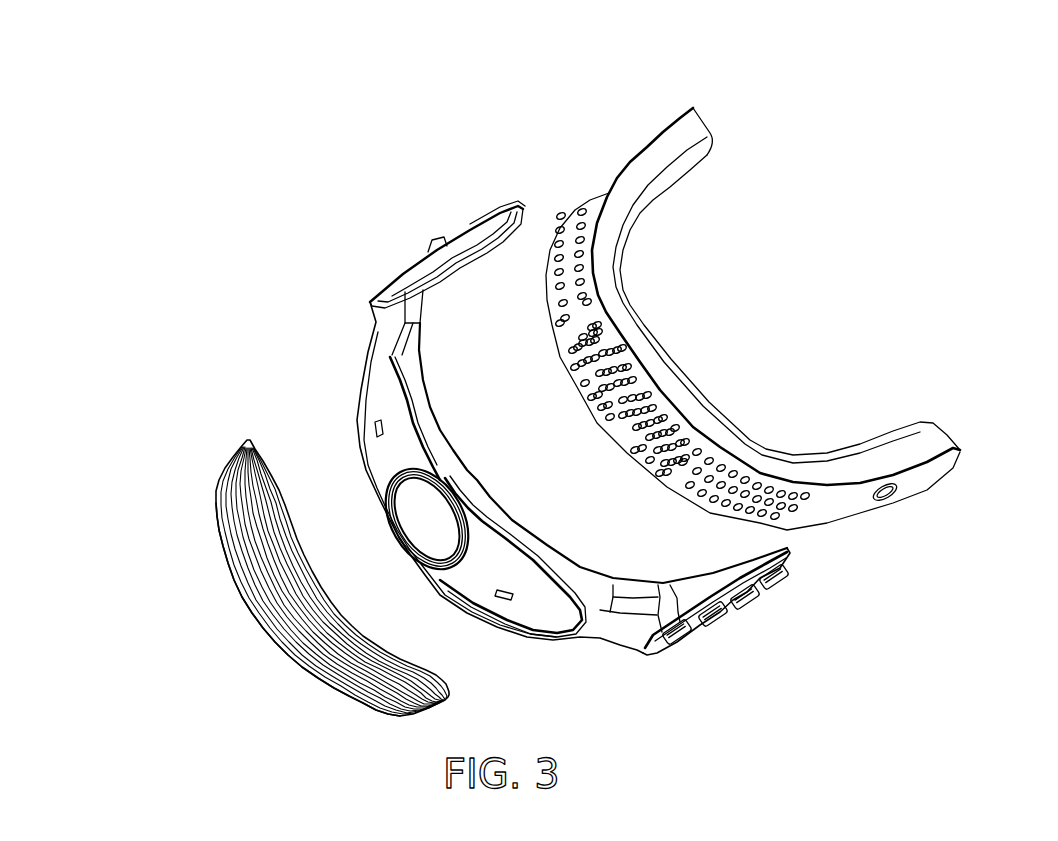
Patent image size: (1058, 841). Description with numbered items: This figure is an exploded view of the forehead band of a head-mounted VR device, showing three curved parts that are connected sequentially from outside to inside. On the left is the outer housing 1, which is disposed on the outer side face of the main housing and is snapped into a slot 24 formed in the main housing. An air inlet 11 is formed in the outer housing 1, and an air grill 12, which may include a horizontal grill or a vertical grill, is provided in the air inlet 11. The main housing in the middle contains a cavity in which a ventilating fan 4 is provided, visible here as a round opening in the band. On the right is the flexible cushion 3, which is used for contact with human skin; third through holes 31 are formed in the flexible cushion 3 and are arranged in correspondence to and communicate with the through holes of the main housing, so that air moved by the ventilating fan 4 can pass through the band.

The outer housing 1 is at (244, 541).
The air inlet 11 is at (243, 577).
The air grill 12 is at (223, 609).
The slot 24 is at (477, 428).
The ventilating fan 4 is at (313, 441).
The flexible cushion 3 is at (598, 272).
The third through holes 31 is at (523, 301).